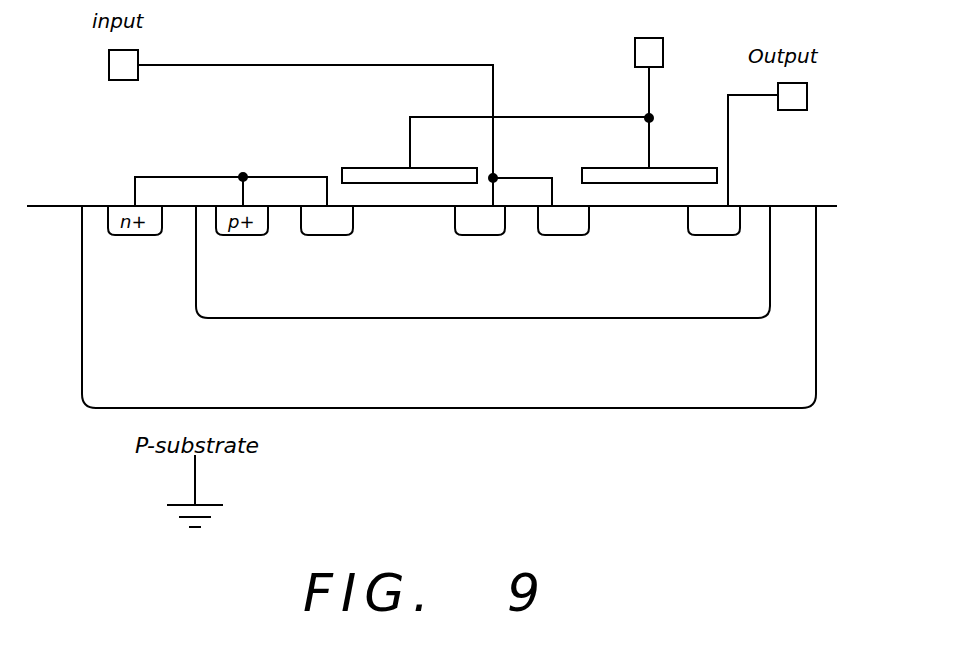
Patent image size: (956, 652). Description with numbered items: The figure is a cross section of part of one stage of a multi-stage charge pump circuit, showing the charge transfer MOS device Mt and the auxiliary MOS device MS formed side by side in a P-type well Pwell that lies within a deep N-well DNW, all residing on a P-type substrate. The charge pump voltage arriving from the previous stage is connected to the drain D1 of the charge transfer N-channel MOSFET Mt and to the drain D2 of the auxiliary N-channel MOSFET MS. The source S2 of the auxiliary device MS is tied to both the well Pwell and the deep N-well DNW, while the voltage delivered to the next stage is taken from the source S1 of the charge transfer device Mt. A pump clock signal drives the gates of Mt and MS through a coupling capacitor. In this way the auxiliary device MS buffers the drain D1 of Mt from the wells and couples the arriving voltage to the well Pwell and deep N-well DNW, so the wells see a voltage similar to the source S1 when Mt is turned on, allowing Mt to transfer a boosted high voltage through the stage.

The source of charge transfer MOS device Mt S1 is at (714, 236).
The source of auxiliary MOS device Ms S2 is at (327, 236).
The drain of charge transfer MOS device Mt D1 is at (563, 236).
The drain of auxiliary MOS device Ms D2 is at (480, 236).
The auxiliary MOS device MS is at (495, 146).
The charge transfer MOS device Mt is at (649, 110).
The P-well Pwell is at (483, 262).
The deep N-well DNW is at (449, 307).